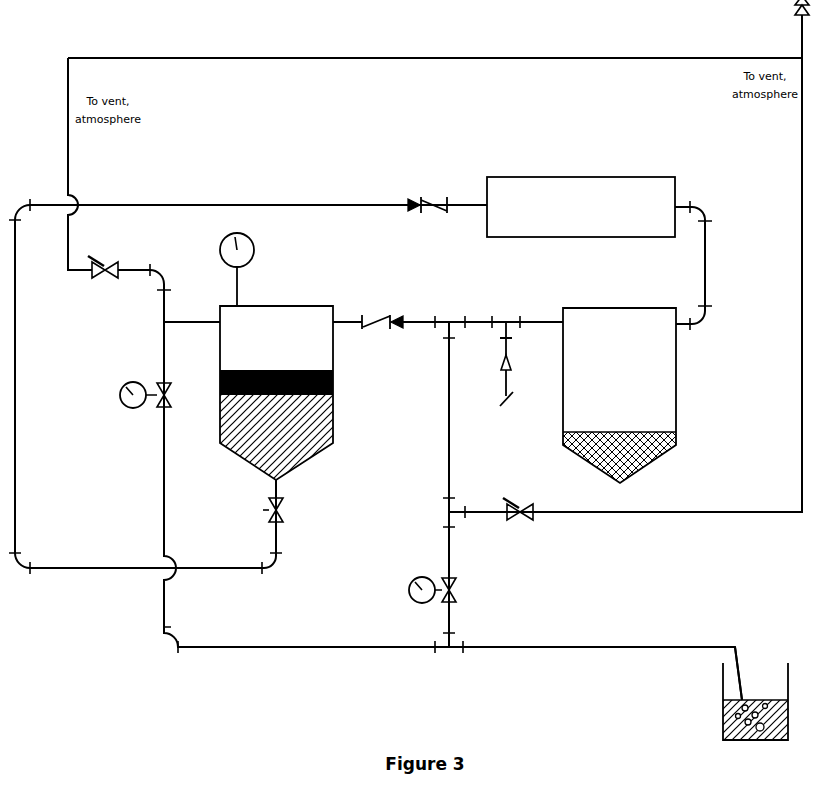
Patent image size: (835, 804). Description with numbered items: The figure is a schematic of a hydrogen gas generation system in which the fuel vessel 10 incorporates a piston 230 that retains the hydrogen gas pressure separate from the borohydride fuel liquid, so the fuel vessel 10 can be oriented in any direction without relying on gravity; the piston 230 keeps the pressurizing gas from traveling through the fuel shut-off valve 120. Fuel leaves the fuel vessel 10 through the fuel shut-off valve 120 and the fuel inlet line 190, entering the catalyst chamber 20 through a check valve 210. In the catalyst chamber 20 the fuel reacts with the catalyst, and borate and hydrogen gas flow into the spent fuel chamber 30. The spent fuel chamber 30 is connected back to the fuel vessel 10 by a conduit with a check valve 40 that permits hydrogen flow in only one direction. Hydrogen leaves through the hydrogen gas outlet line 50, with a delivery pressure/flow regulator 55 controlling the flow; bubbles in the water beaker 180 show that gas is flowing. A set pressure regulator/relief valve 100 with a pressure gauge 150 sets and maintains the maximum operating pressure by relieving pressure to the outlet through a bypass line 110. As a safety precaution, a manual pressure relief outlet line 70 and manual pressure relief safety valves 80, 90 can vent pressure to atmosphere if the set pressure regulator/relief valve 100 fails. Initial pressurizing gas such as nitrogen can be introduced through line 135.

The fuel vessel 10 is at (340, 438).
The catalyst chamber 20 is at (565, 170).
The spent fuel chamber 30 is at (684, 385).
The check valve 40 is at (375, 305).
The hydrogen gas outlet line 50 is at (748, 666).
The delivery pressure/flow regulator 55 is at (460, 588).
The manual pressure relief outlet line 70 is at (790, 31).
The manual pressure relief safety valve 80 is at (120, 258).
The manual pressure relief safety valve 90 is at (530, 526).
The set pressure regulator/relief valve 100 is at (152, 418).
The bypass line 110 is at (250, 657).
The fuel shut-off valve 120 is at (292, 520).
The line 135 is at (497, 383).
The pressure gauge 150 is at (262, 239).
The water beaker 180 is at (722, 720).
The fuel inlet line 190 is at (118, 573).
The check valve 210 is at (436, 192).
The piston 230 is at (340, 381).